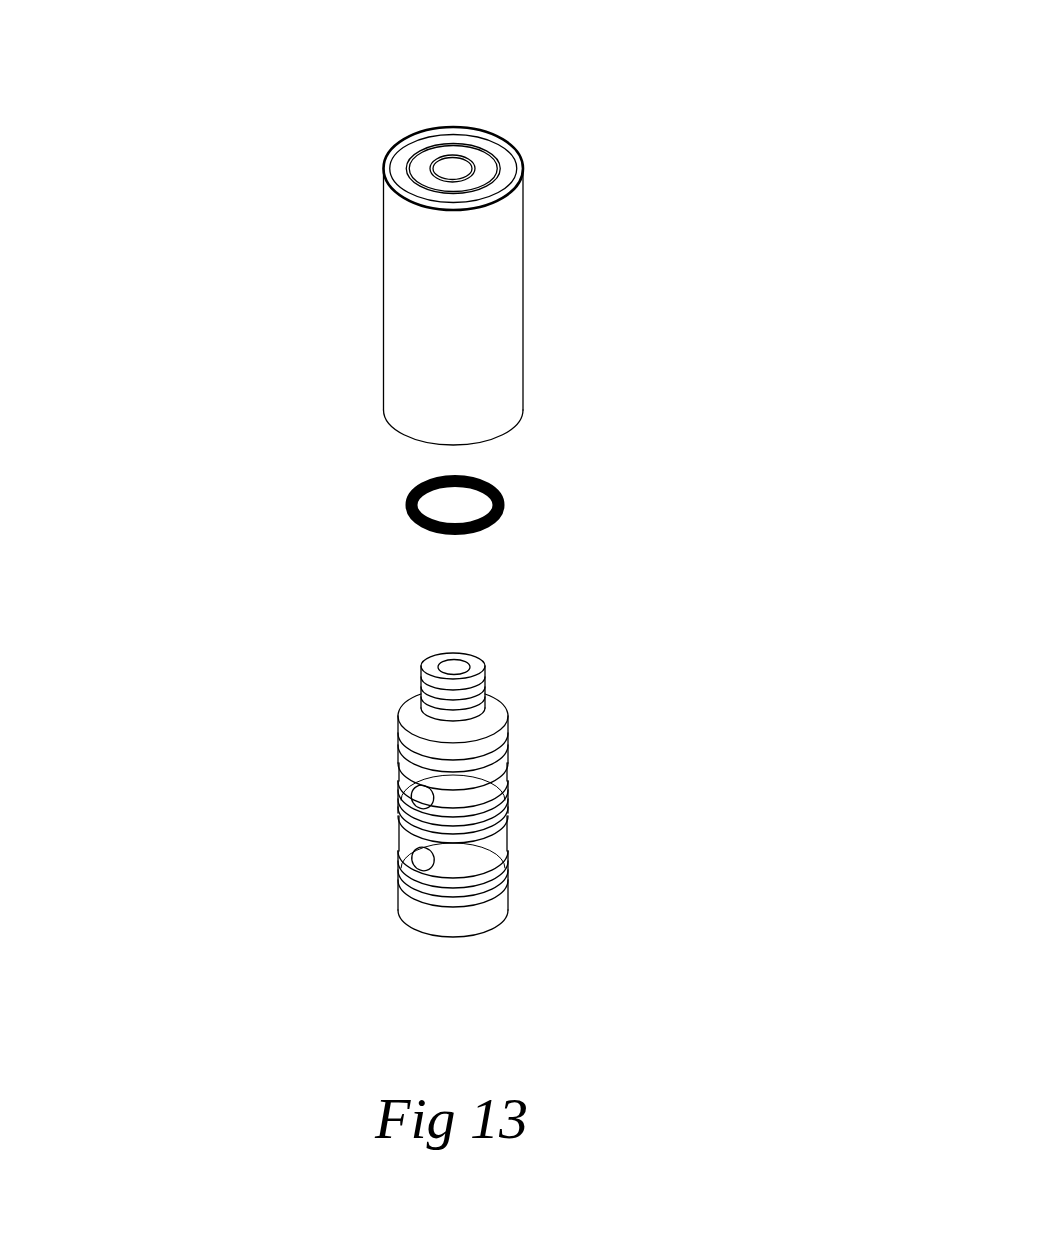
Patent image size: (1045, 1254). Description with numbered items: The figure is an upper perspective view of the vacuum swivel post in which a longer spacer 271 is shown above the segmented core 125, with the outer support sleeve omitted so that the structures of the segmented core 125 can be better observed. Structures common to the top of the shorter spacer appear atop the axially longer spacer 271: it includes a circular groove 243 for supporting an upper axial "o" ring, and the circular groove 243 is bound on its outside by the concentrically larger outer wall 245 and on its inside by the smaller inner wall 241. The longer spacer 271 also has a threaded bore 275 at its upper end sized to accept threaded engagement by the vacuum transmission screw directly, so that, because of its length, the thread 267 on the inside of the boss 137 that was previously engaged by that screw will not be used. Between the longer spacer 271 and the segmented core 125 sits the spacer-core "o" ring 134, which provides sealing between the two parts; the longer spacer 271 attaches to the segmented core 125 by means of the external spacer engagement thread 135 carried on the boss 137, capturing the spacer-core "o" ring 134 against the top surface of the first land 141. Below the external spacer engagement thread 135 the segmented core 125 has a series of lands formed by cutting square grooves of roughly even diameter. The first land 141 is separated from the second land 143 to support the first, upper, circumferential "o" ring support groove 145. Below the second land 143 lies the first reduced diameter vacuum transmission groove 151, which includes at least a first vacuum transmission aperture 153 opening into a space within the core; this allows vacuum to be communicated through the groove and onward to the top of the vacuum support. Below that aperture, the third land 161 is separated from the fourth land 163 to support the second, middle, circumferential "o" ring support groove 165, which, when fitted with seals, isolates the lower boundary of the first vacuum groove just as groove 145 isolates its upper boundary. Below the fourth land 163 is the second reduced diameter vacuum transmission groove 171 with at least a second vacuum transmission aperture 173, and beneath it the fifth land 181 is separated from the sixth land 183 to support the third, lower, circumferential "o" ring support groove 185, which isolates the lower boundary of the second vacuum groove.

The segmented core 125 is at (345, 701).
The spacer-core "o" ring 134 is at (495, 487).
The external spacer engagement thread 135 is at (487, 679).
The boss 137 is at (523, 646).
The first land 141 is at (510, 730).
The second land 143 is at (505, 782).
The first, upper, circumferential "o" ring support groove 145 is at (512, 757).
The first reduced diameter vacuum transmission groove 151 is at (508, 797).
The first vacuum transmission aperture 153 is at (405, 803).
The third land 161 is at (507, 807).
The fourth land 163 is at (507, 841).
The second, middle, circumferential "o" ring support groove 165 is at (508, 827).
The second reduced diameter vacuum transmission groove 171 is at (512, 860).
The second vacuum transmission aperture 173 is at (405, 868).
The fifth land 181 is at (508, 881).
The sixth land 183 is at (485, 930).
The third, lower, circumferential "o" ring support groove 185 is at (505, 900).
The inner annular ring 241 is at (507, 172).
The circular groove 243 is at (515, 160).
The outer wall 245 is at (448, 165).
The thread 267 is at (453, 666).
The longer spacer 271 is at (487, 227).
The threaded bore 275 is at (414, 145).